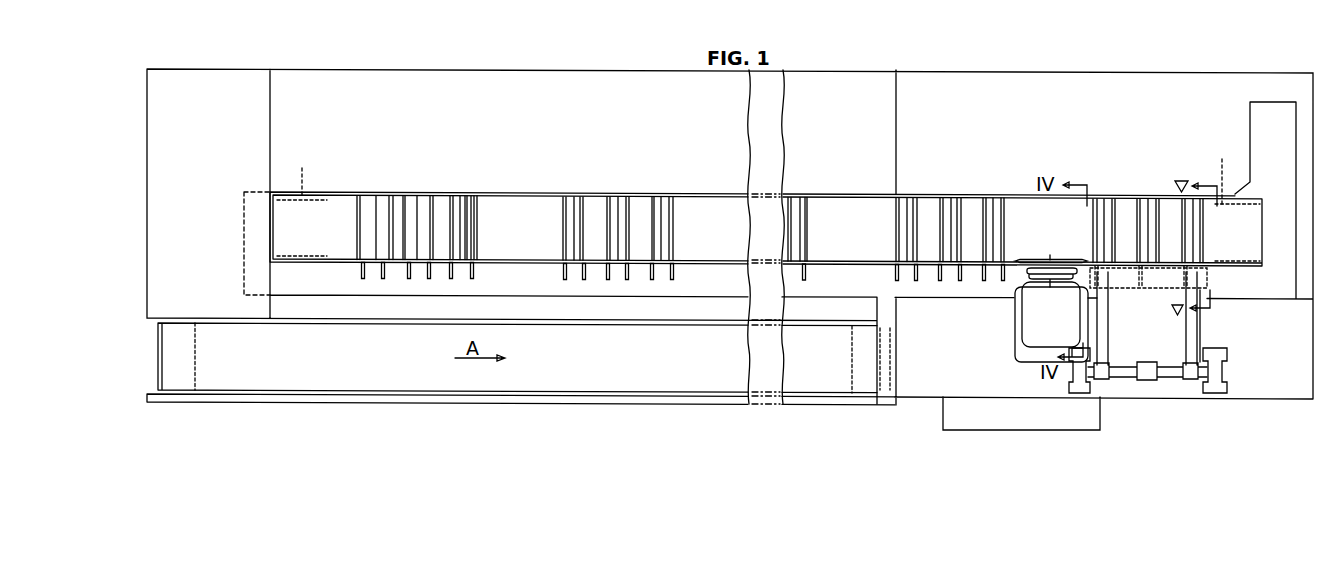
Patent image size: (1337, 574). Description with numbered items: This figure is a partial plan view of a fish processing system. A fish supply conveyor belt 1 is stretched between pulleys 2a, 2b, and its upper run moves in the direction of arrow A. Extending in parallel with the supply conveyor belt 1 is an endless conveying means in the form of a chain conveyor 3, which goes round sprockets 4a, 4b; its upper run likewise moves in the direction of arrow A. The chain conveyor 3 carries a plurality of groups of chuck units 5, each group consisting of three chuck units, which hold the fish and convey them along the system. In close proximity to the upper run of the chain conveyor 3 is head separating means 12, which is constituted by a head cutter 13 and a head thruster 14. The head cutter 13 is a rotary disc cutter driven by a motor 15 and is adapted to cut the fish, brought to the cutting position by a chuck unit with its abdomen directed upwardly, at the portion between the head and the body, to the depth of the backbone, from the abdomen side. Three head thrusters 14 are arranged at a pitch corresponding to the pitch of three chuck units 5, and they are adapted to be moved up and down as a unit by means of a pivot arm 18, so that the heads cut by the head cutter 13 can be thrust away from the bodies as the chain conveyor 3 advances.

The fish supply conveyor belt 1 is at (259, 378).
The pulley 2a is at (160, 356).
The pulley 2b is at (852, 393).
The chain conveyor 3 is at (718, 194).
The sprocket 4a is at (308, 172).
The sprocket 4b is at (1217, 172).
The chuck units 5 is at (462, 203).
The head separating means 12 is at (1163, 344).
The head cutter 13 is at (1041, 261).
The head thruster 14 is at (1188, 269).
The motor 15 is at (1028, 322).
The pivot arm 18 is at (1193, 336).